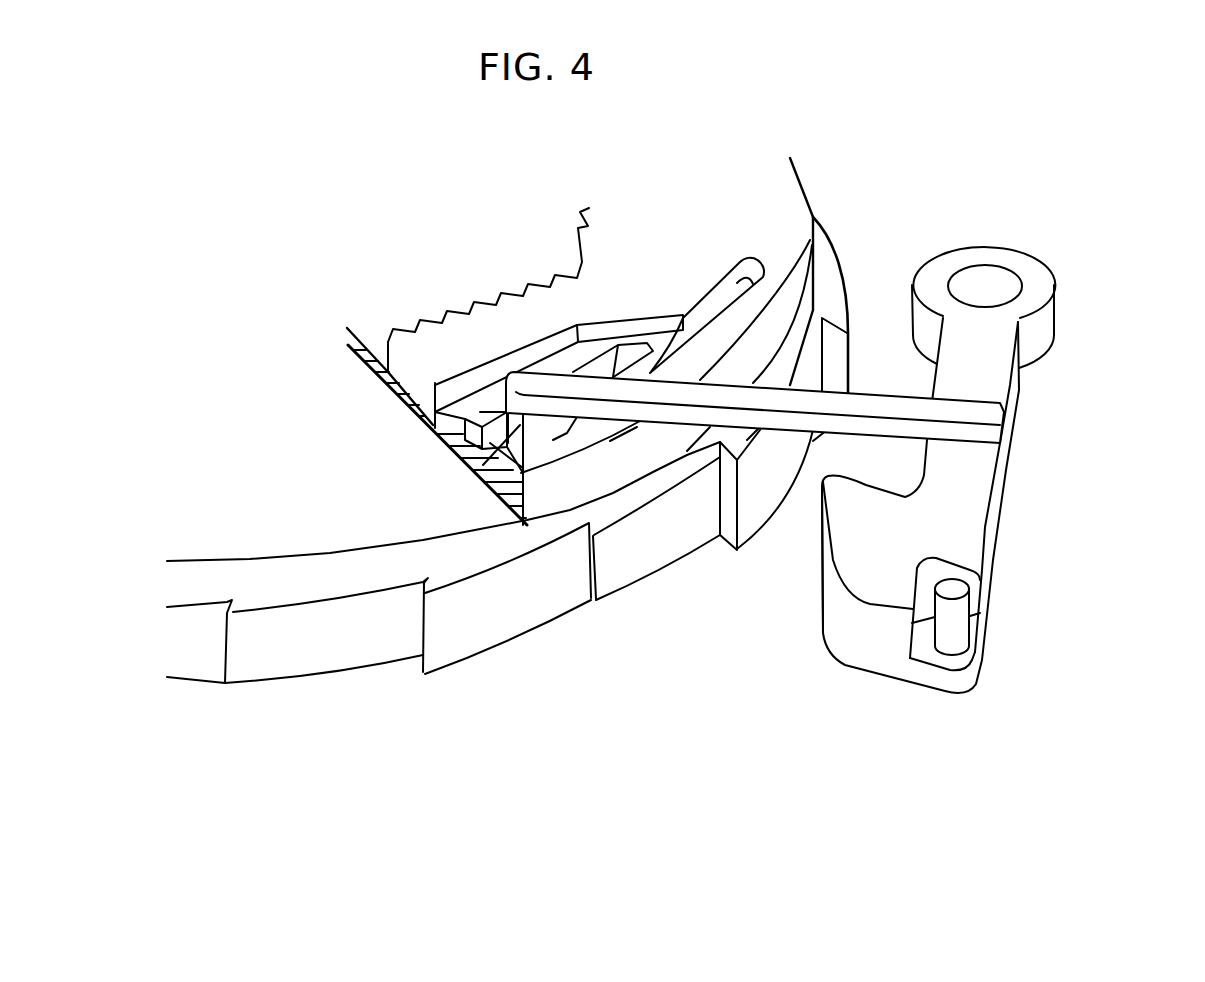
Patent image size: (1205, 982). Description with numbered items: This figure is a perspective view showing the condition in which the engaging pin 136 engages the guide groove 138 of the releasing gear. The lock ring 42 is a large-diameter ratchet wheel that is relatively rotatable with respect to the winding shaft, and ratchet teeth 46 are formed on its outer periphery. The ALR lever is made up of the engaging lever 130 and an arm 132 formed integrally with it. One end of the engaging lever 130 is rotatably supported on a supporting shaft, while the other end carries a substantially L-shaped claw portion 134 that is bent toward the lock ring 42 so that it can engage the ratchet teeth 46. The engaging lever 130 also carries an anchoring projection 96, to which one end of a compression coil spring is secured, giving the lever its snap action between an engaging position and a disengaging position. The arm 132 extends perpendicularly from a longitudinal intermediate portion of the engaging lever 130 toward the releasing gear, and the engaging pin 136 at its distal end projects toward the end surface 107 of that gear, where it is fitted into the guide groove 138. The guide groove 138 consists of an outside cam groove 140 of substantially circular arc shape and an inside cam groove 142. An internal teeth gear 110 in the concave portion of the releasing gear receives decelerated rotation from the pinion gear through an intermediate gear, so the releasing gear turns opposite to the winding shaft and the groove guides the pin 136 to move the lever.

The lock ring 42 is at (383, 673).
The ratchet teeth 46 is at (525, 595).
The anchoring projection 96 is at (952, 634).
The end surface 107 is at (787, 188).
The internal teeth gear 110 is at (580, 215).
The engaging lever 130 is at (1016, 480).
The arm 132 is at (876, 384).
The claw portion 134 is at (843, 532).
The engaging pin 136 is at (467, 477).
The guide groove 138 is at (644, 306).
The outside cam groove 140 is at (712, 303).
The inside cam groove 142 is at (489, 396).